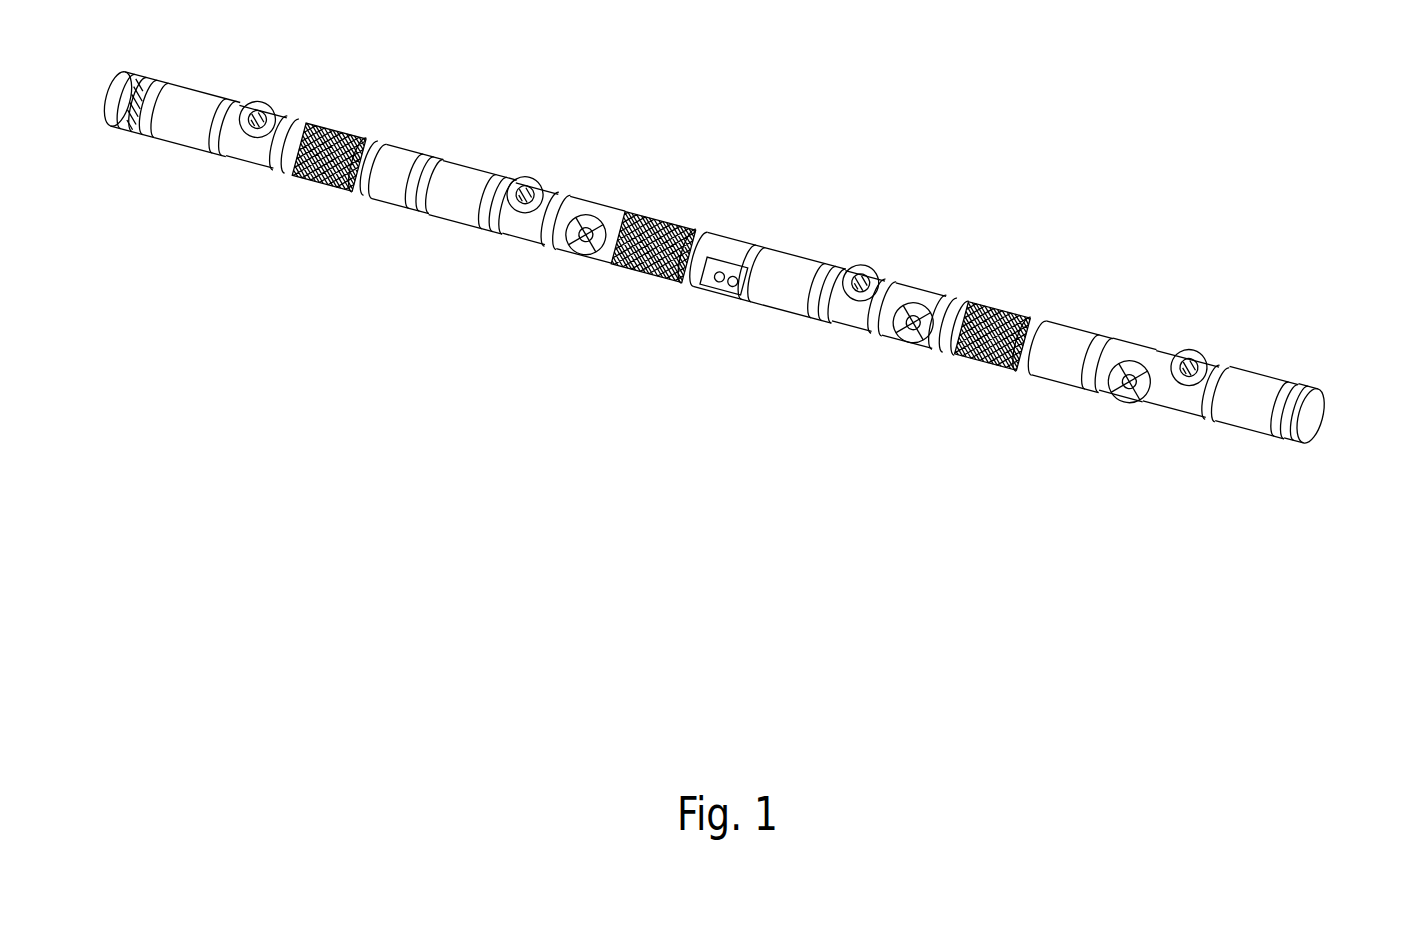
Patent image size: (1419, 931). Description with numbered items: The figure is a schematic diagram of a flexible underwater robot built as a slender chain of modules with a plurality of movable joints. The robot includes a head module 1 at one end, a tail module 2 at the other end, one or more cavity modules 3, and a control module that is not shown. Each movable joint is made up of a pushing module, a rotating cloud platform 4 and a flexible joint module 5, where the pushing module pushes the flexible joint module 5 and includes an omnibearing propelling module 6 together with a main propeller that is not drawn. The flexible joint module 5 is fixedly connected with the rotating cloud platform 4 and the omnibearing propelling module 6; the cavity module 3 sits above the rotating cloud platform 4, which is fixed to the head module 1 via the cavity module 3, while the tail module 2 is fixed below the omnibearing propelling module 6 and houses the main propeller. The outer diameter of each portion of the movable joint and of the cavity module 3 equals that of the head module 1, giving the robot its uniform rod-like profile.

The head module 1 is at (1351, 340).
The tail module 2 is at (111, 156).
The cavity module 3 is at (722, 320).
The rotating cloud platform 4 is at (544, 276).
The flexible joint module 5 is at (669, 255).
The omnibearing propelling module 6 is at (724, 229).